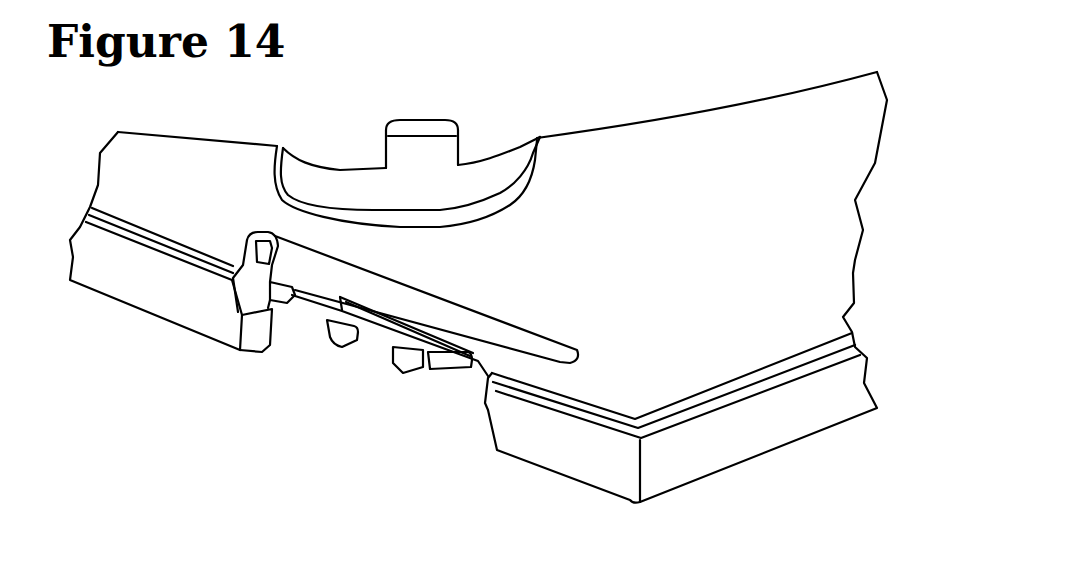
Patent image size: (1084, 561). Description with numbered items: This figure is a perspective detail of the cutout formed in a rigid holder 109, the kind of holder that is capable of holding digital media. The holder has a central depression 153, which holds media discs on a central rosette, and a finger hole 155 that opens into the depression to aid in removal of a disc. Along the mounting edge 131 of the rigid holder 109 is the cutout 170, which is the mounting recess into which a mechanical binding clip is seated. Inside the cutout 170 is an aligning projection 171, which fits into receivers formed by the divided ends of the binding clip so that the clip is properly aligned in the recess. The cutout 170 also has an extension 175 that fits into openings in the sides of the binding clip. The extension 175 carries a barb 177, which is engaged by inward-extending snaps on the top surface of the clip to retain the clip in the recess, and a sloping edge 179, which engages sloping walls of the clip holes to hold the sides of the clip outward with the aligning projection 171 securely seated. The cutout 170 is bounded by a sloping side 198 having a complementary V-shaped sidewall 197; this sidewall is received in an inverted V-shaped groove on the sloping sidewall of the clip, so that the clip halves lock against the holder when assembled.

The rigid holder 109 is at (740, 90).
The mounting edge 131 is at (162, 321).
The central depression 153 is at (633, 123).
The finger hole 155 is at (503, 153).
The cutout 170 is at (317, 304).
The aligning projection 171 is at (282, 280).
The extension 175 is at (369, 344).
The barb 177 is at (335, 334).
The sloping edge 179 is at (442, 363).
The V-shaped sidewall 197 is at (268, 343).
The sloping side 198 is at (283, 284).